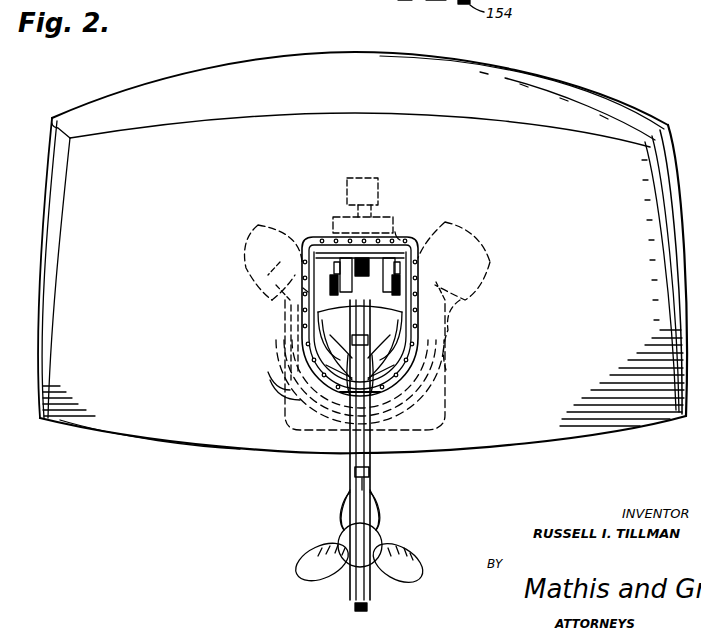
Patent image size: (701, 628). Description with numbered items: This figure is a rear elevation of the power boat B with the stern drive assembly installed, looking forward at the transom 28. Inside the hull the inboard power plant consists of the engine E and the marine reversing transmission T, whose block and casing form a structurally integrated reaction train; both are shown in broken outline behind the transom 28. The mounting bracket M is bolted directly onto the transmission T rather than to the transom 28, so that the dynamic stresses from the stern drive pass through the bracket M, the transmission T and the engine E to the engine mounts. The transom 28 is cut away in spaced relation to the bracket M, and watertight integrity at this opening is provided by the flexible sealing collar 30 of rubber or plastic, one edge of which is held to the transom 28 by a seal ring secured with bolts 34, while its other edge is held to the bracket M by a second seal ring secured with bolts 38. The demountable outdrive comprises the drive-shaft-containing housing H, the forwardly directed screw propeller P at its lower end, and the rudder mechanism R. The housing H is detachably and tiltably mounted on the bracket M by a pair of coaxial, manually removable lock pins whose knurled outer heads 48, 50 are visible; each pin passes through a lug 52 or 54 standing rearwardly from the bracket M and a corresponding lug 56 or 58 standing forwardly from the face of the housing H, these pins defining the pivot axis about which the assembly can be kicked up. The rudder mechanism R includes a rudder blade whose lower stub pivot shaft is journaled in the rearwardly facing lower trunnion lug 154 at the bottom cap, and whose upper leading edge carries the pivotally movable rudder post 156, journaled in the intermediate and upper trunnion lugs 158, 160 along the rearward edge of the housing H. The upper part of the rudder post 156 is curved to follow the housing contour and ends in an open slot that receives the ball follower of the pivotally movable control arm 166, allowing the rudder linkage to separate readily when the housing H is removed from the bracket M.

The power boat B is at (350, 100).
The transom 28 is at (152, 425).
The flexible sealing collar 30 is at (405, 382).
The bolts 34 is at (398, 232).
The bolts 38 is at (300, 367).
The knurled outer head 48 is at (303, 290).
The knurled outer head 50 is at (432, 292).
The lug 52 is at (302, 272).
The lug 54 is at (413, 263).
The lug 56 is at (303, 283).
The lug 58 is at (428, 290).
The lower trunnion lug 154 is at (356, 608).
The rudder post 156 is at (358, 442).
The intermediate trunnion lug 158 is at (370, 473).
The upper trunnion lug 160 is at (372, 340).
The control arm 166 is at (303, 262).
The mounting bracket M is at (340, 238).
The engine E is at (290, 291).
The marine reversing transmission T is at (290, 350).
The drive housing H is at (345, 520).
The rudder mechanism R is at (372, 476).
The screw propeller P is at (312, 568).